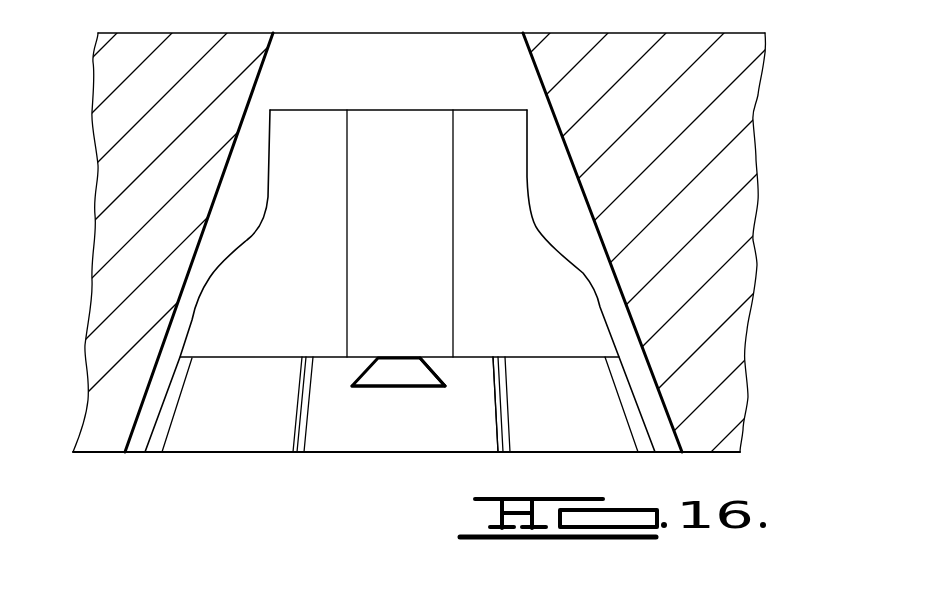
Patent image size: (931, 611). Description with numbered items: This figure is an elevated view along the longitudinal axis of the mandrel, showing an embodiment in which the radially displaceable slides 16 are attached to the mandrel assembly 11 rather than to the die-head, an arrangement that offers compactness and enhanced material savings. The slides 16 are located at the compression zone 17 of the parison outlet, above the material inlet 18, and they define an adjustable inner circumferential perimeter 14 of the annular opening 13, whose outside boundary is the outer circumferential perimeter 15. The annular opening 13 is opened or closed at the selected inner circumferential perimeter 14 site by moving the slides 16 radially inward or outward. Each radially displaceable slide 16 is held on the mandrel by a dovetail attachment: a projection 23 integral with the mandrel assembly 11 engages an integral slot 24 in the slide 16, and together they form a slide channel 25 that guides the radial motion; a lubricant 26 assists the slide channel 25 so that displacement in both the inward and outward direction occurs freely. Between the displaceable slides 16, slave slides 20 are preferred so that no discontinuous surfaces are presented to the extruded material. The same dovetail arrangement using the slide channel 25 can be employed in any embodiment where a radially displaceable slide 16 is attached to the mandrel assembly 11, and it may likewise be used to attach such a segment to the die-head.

The mandrel assembly 11 is at (506, 137).
The annular opening 13 is at (668, 452).
The inner circumferential perimeter 14 is at (127, 455).
The outer circumferential perimeter 15 is at (139, 455).
The radially displaceable slide 16 is at (404, 444).
The compression zone 17 is at (729, 184).
The material inlet 18 is at (258, 108).
The slave slides 20 is at (306, 433).
The projection 23 is at (391, 368).
The slot 24 is at (413, 382).
The slide channel 25 is at (494, 366).
The lubricant 26 is at (390, 387).